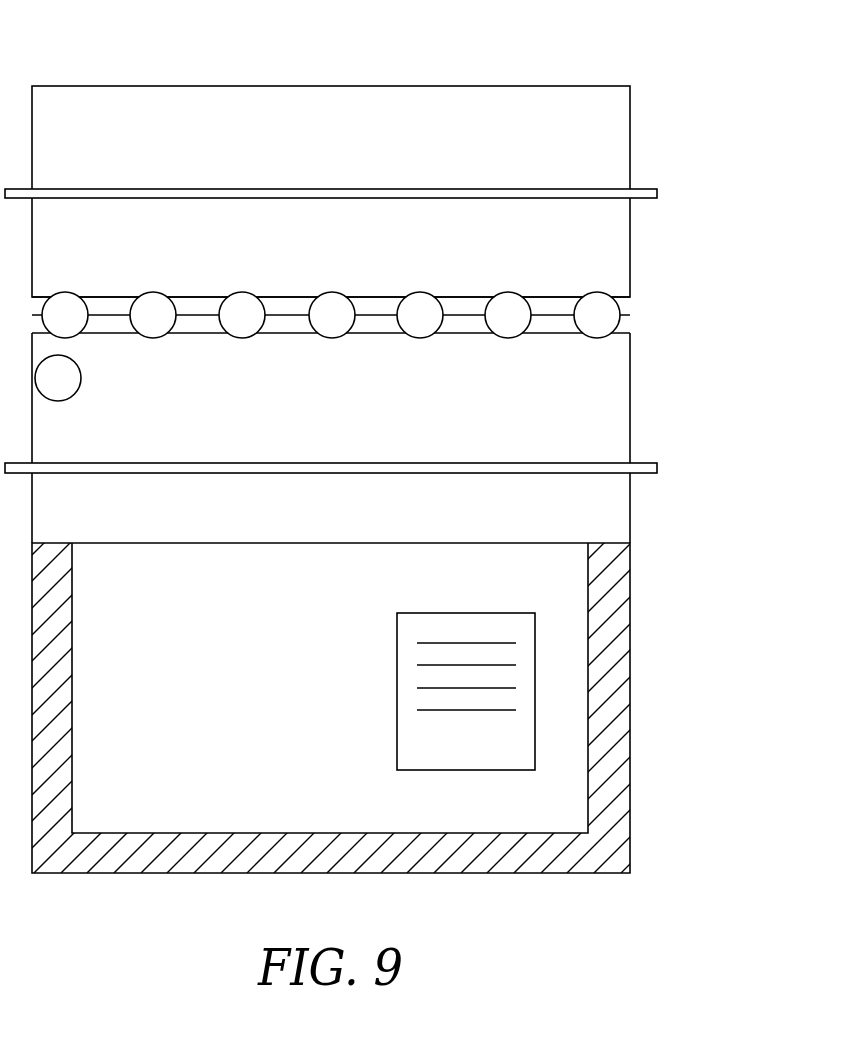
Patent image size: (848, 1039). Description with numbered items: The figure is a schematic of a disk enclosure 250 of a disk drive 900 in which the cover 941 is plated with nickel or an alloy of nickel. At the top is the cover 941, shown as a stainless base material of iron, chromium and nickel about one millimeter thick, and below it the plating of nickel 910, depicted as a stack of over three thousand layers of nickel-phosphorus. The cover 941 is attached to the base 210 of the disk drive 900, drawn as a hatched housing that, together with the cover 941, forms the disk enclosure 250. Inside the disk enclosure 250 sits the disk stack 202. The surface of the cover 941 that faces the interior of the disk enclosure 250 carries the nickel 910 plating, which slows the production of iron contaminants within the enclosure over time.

The disk drive 900 is at (742, 56).
The cover 941 is at (617, 146).
The nickel plating 910 is at (613, 416).
The base 210 is at (560, 866).
The disk enclosure 250 is at (558, 770).
The disk stack 202 is at (407, 721).